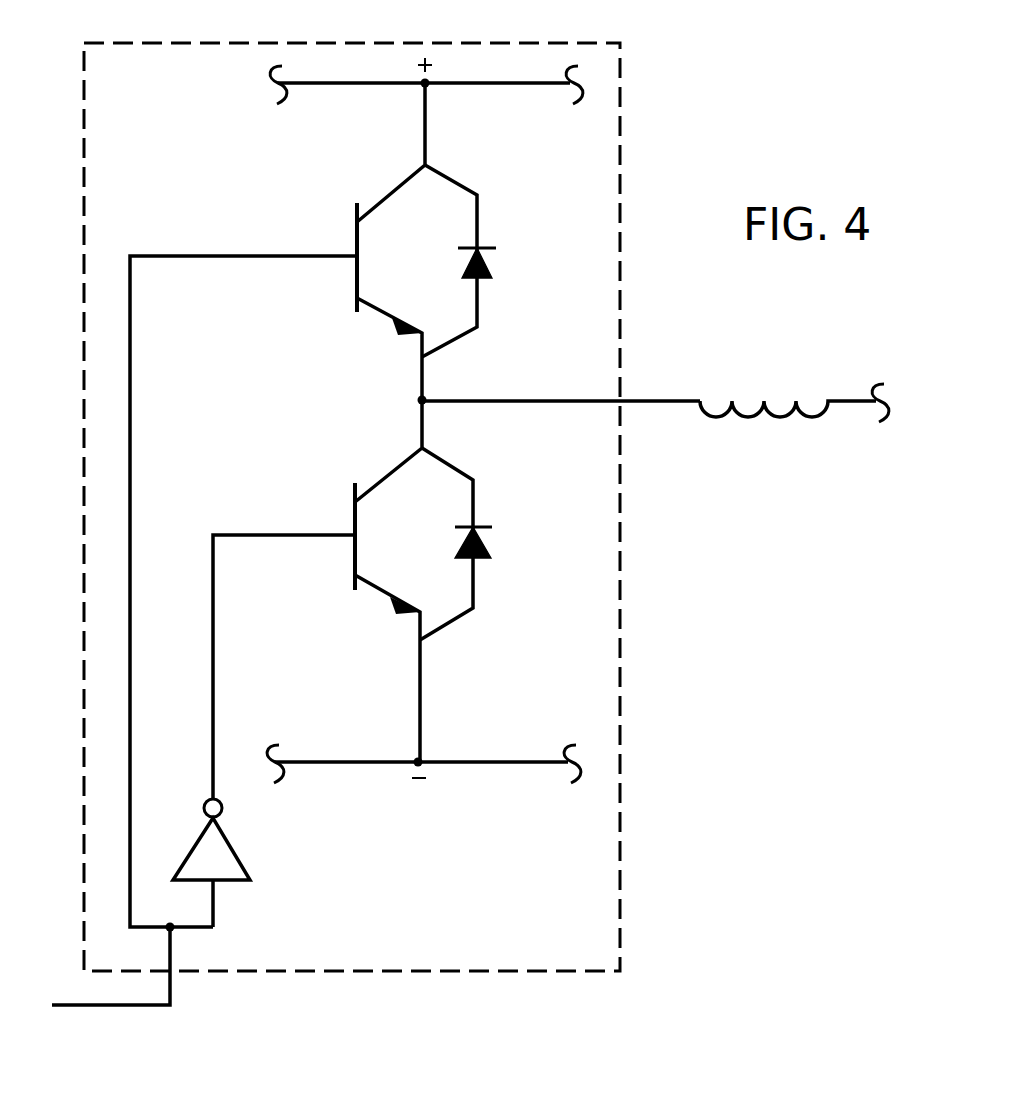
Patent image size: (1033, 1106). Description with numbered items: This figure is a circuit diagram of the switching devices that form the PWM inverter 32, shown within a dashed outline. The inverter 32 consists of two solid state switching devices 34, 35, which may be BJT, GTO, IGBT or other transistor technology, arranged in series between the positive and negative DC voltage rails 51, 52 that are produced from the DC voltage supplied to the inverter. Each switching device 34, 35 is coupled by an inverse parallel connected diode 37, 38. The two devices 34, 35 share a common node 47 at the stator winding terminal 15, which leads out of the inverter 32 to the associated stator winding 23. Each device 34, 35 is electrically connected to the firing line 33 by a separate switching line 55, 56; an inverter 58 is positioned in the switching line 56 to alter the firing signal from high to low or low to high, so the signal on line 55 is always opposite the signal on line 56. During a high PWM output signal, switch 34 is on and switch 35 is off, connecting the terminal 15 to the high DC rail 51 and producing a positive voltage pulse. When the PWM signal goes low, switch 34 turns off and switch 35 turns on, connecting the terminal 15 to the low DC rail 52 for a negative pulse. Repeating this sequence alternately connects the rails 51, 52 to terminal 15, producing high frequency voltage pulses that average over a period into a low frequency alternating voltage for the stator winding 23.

The stator winding terminal 15 is at (650, 400).
The stator winding 23 is at (813, 422).
The inverter 32 is at (597, 160).
The firing line 33 is at (143, 1010).
The solid state switching device 34 is at (427, 218).
The solid state switching device 35 is at (407, 527).
The inverse parallel connected diode 37 is at (492, 270).
The inverse parallel connected diode 38 is at (490, 557).
The output node 47 is at (422, 398).
The positive DC voltage rail 51 is at (465, 85).
The negative DC voltage rail 52 is at (518, 763).
The switching line 55 is at (129, 566).
The switching line 56 is at (215, 720).
The inverter 58 is at (247, 868).